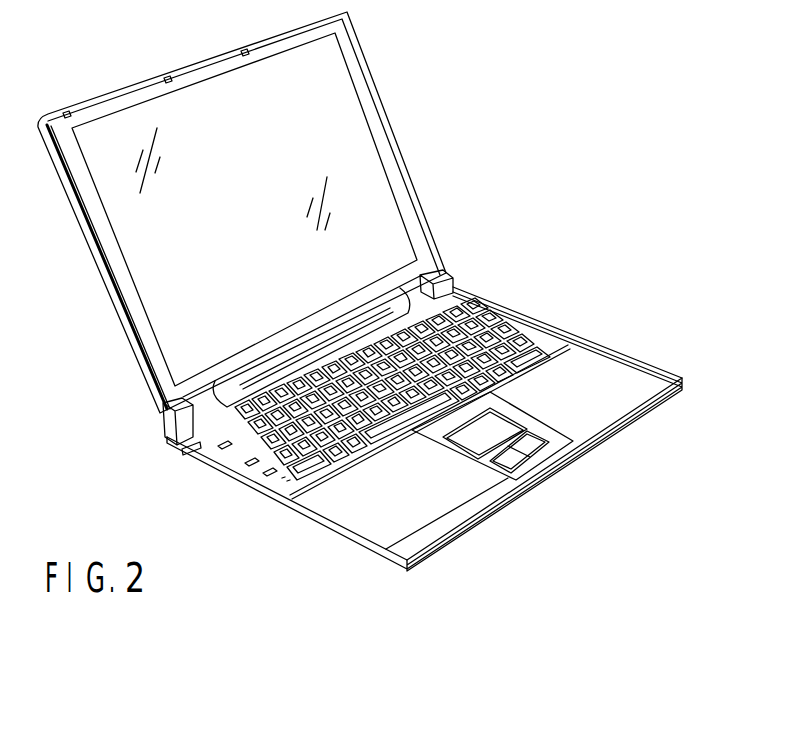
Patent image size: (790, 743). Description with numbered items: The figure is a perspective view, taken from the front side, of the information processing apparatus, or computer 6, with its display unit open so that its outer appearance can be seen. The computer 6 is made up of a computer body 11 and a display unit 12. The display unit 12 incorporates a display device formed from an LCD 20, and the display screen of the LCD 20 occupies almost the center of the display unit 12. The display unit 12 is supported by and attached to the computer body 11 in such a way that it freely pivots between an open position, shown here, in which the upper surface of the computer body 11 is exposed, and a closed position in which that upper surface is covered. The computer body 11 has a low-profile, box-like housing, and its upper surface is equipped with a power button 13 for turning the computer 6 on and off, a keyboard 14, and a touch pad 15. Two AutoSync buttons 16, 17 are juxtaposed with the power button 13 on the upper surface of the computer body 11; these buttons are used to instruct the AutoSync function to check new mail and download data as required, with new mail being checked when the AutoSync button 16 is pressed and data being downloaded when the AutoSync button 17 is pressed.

The information processing apparatus (computer) 6 is at (483, 292).
The computer body 11 is at (595, 343).
The display unit 12 is at (383, 145).
The power button 13 is at (222, 448).
The keyboard 14 is at (498, 317).
The touch pad 15 is at (468, 440).
The AutoSync button 16 is at (250, 465).
The AutoSync button 17 is at (270, 475).
The LCD (Liquid Crystal Display) 20 is at (342, 108).